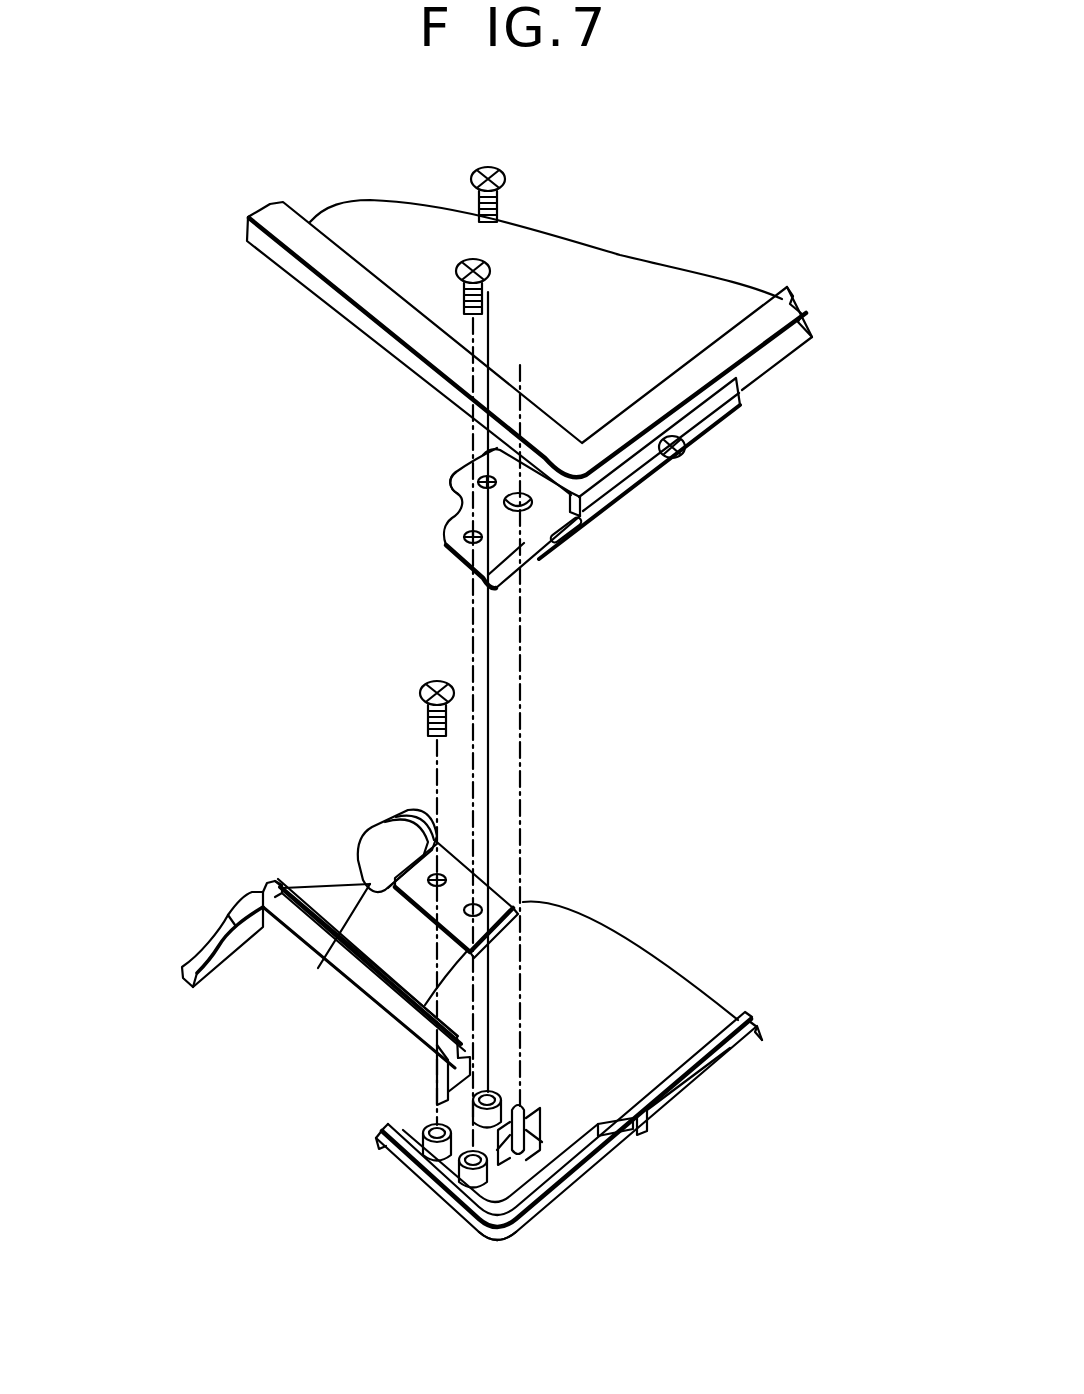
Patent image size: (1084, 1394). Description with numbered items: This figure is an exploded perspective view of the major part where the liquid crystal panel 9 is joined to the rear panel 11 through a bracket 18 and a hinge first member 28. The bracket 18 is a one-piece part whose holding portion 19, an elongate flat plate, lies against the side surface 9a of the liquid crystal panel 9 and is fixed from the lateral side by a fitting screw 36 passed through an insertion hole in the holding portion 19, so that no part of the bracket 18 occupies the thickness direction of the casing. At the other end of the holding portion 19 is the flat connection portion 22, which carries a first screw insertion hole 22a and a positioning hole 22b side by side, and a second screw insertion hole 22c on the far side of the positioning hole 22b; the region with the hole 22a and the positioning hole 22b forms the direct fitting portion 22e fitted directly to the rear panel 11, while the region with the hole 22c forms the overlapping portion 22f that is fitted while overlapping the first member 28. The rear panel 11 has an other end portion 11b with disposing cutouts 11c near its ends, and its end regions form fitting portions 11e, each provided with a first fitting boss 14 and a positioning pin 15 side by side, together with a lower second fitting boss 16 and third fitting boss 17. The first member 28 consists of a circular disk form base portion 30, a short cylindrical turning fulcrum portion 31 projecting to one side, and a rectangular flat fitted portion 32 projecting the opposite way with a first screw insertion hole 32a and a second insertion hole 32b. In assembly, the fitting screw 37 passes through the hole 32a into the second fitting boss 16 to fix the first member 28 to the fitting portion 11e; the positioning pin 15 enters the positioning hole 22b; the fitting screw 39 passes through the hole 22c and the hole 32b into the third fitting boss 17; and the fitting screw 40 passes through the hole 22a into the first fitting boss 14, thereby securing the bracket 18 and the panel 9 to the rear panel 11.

The liquid crystal panel 9 is at (638, 282).
The side surface of the liquid crystal panel 9a is at (780, 350).
The rear panel 11 is at (567, 933).
The other end portion of the rear panel 11b is at (517, 1173).
The disposing cutout 11c is at (252, 928).
The fitting portion 11e is at (497, 1190).
The first fitting boss 14 is at (490, 1088).
The positioning pin 15 is at (600, 1146).
The second fitting boss 16 is at (437, 1155).
The third fitting boss 17 is at (477, 1183).
The bracket 18 is at (717, 410).
The holding portion 19 is at (712, 432).
The connection portion 22 is at (453, 542).
The first screw insertion hole 22a is at (480, 479).
The positioning hole 22b is at (452, 494).
The second screw insertion hole 22c is at (524, 543).
The direct fitting portion 22e is at (527, 510).
The overlapping portion 22f is at (463, 560).
The first member 28 is at (487, 893).
The base portion 30 is at (416, 816).
The turning fulcrum portion 31 is at (382, 824).
The fitted portion 32 is at (383, 943).
The first screw insertion hole 32a is at (433, 900).
The second insertion hole 32b is at (400, 965).
The fitting screw 36 is at (675, 460).
The fitting screw 37 is at (428, 682).
The fitting screw 39 is at (470, 258).
The fitting screw 40 is at (490, 166).